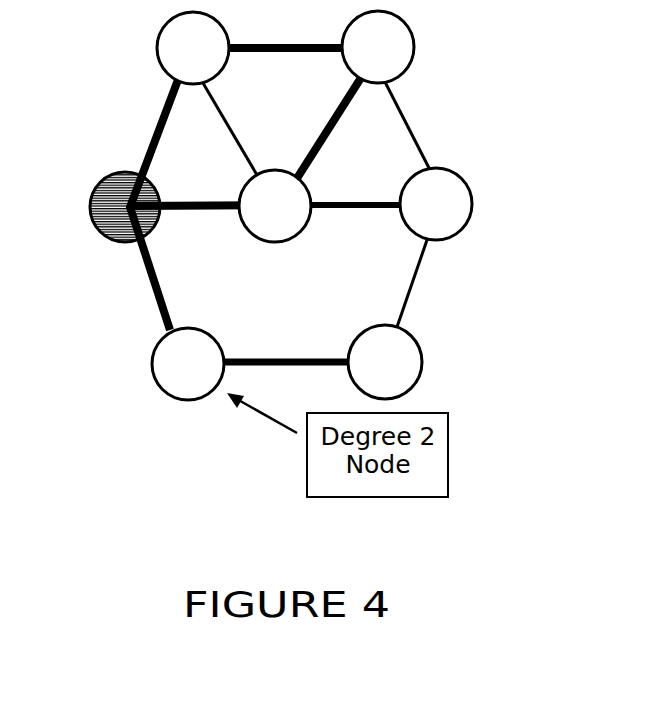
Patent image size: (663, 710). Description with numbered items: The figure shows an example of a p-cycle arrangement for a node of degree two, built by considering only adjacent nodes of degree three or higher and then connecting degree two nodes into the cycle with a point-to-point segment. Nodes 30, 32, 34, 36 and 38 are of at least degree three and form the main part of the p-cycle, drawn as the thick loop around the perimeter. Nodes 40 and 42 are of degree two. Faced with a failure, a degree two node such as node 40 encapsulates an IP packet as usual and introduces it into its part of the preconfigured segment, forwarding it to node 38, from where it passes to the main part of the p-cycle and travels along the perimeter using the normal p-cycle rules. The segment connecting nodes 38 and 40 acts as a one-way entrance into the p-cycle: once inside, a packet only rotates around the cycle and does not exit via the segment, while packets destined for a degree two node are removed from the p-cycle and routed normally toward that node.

The node 30 is at (153, 50).
The node 32 is at (415, 47).
The node 34 is at (310, 190).
The node 36 is at (472, 200).
The node 38 is at (157, 230).
The degree 2 node 40 is at (218, 342).
The degree 2 node 42 is at (422, 352).